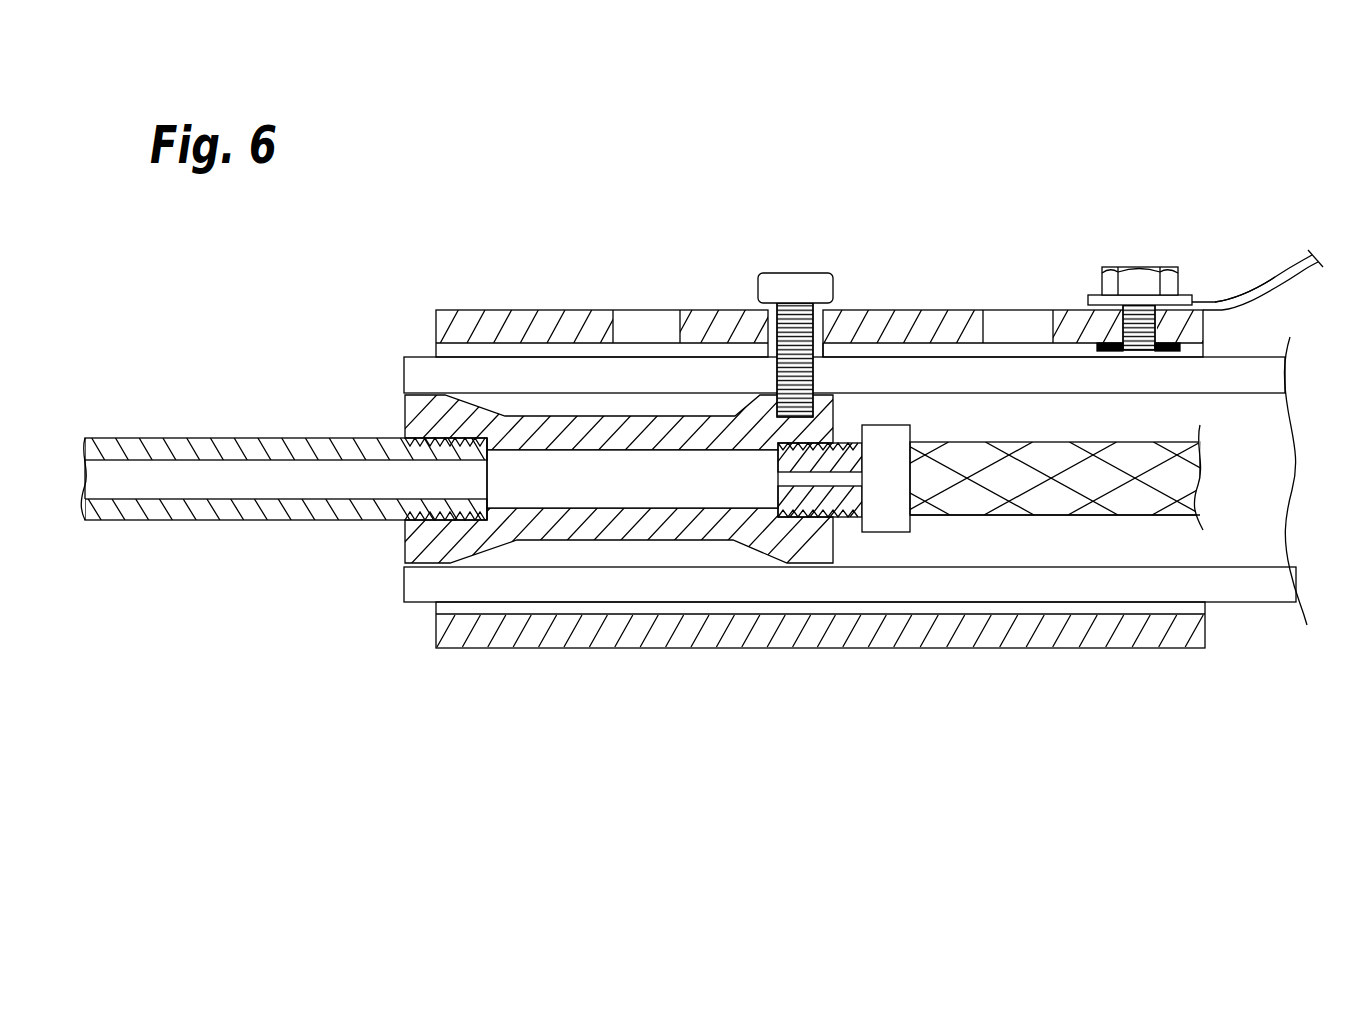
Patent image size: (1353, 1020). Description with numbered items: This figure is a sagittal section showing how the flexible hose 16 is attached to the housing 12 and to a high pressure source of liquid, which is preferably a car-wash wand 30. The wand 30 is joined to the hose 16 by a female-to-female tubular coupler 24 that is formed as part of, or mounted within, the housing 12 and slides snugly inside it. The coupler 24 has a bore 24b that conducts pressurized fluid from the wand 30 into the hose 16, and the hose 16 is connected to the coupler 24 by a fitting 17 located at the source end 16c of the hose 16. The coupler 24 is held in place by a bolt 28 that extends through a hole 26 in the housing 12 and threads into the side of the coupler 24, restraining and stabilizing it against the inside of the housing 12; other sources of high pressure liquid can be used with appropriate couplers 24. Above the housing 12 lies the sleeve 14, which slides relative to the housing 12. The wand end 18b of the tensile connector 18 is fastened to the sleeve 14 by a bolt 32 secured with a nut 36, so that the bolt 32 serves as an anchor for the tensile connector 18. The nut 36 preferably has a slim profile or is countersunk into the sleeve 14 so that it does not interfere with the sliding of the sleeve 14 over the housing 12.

The housing 12 is at (403, 368).
The sleeve 14 is at (713, 310).
The flexible hose 16 is at (1017, 442).
The source end 16c is at (923, 516).
The fitting 17 is at (905, 427).
The tensile connector 18 is at (1298, 257).
The wand end 18b is at (1257, 283).
The female-to-female tubular coupler 24 is at (403, 412).
The bore 24b is at (651, 493).
The hole 26 is at (823, 325).
The bolt 28 is at (777, 273).
The car-wash wand 30 is at (247, 520).
The bolt 32 is at (1148, 267).
The nut 36 is at (1203, 350).